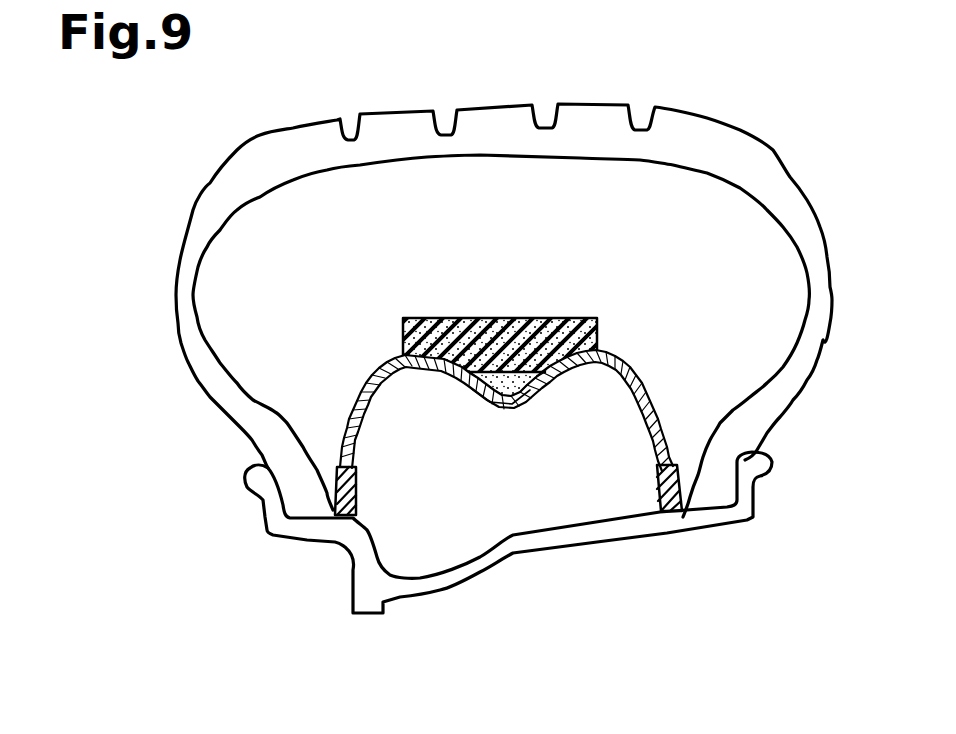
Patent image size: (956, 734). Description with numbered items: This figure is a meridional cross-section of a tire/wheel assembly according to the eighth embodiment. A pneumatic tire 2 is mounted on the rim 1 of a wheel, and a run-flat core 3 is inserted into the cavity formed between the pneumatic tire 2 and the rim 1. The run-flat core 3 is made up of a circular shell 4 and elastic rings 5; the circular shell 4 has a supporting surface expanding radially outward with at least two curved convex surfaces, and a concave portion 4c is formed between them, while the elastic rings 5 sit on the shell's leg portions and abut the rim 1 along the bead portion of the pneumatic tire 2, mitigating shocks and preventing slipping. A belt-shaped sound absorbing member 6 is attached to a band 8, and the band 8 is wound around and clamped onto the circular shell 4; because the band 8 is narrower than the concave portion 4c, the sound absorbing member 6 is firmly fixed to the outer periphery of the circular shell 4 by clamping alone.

The rim 1 is at (597, 533).
The pneumatic tire 2 is at (728, 147).
The run-flat core 3 is at (504, 267).
The circular shell 4 is at (634, 364).
The concave portion 4c is at (493, 399).
The elastic rings 5 is at (358, 488).
The sound absorbing member 6 is at (557, 316).
The band 8 is at (495, 394).